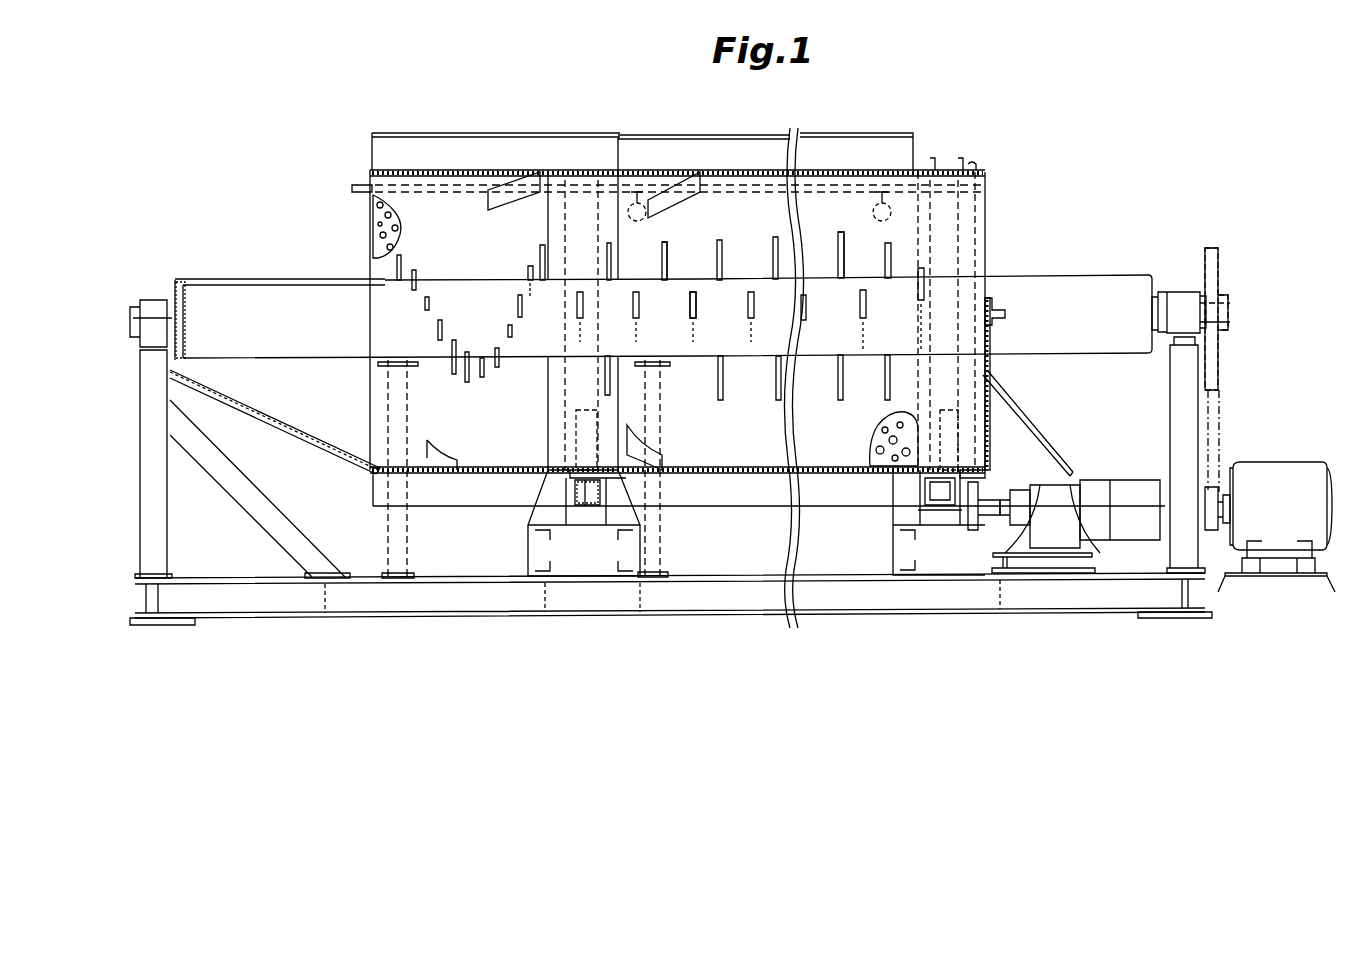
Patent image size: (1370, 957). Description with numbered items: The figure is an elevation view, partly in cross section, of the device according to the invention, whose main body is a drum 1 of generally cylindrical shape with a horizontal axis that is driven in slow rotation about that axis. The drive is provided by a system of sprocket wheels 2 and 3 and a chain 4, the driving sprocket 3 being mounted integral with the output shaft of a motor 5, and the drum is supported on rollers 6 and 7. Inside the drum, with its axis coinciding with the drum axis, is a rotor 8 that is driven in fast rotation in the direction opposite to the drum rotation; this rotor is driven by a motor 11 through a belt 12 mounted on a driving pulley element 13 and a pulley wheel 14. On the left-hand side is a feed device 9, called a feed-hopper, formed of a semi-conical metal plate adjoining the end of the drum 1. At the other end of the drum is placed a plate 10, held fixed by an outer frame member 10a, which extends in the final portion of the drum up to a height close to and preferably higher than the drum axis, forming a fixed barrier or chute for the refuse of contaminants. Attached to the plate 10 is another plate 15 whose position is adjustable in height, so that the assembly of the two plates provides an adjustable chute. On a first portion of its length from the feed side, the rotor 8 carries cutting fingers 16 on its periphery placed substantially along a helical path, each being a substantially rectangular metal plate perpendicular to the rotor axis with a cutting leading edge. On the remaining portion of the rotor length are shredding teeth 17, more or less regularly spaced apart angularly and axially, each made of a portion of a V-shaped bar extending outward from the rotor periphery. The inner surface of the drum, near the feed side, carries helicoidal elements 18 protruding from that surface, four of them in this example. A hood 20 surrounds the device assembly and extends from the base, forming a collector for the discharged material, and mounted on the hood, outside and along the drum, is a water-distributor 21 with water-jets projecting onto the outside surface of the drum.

The drum 1 is at (755, 482).
The sprocket wheel 2 is at (975, 167).
The driving sprocket 3 is at (972, 528).
The chain 4 is at (978, 478).
The motor 5 is at (1150, 540).
The roller 6 is at (583, 498).
The roller 7 is at (920, 485).
The rotor 8 is at (848, 285).
The feed device 9 is at (312, 440).
The plate 10 is at (990, 378).
The outer frame member 10a is at (1035, 432).
The motor 11 is at (1290, 463).
The belt 12 is at (1215, 400).
The driving pulley element 13 is at (1212, 487).
The pulley wheel 14 is at (1215, 262).
The plate 15 is at (992, 300).
The cutting fingers 16 is at (440, 335).
The shredding teeth 17 is at (695, 300).
The helicoidal element 18 is at (665, 185).
The hood 20 is at (468, 133).
The water-distributor 21 is at (358, 185).